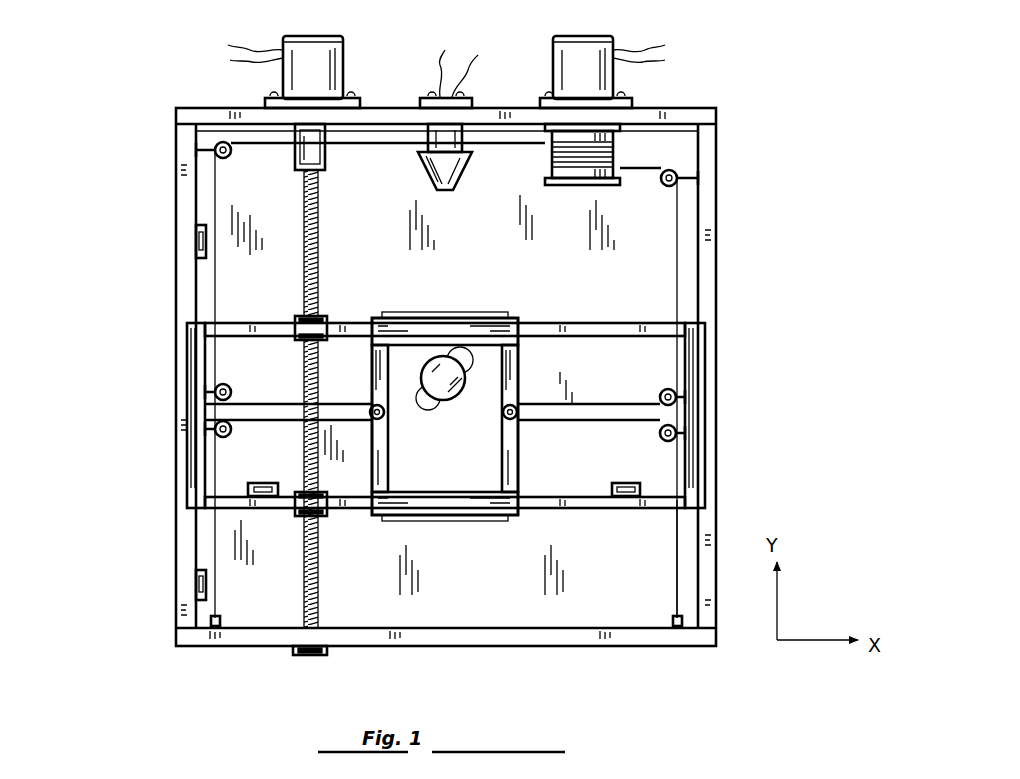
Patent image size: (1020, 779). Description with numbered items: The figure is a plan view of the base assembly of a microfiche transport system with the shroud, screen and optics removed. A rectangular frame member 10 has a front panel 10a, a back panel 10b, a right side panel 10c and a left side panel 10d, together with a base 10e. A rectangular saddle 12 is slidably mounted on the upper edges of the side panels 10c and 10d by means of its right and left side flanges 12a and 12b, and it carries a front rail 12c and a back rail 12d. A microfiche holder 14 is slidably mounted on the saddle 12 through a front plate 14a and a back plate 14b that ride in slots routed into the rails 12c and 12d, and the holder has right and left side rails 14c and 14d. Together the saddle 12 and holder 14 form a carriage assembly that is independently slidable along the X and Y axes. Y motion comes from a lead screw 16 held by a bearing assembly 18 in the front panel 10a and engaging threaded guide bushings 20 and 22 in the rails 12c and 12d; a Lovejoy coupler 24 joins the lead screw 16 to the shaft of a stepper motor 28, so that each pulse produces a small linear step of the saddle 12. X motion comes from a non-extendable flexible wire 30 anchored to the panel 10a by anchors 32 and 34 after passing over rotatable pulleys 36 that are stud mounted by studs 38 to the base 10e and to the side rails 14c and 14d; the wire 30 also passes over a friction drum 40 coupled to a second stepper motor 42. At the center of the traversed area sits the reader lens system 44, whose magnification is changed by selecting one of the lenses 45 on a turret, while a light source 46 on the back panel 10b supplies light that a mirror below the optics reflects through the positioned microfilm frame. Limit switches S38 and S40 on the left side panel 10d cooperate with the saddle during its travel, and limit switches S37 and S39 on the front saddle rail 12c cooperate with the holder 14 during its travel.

The frame member 10 is at (452, 378).
The front panel 10a is at (553, 647).
The back panel 10b is at (680, 108).
The right side panel 10c is at (716, 294).
The left side panel 10d is at (176, 288).
The base 10e is at (456, 602).
The saddle 12 is at (445, 404).
The right side flange 12a is at (706, 407).
The left side flange 12b is at (187, 408).
The front rail 12c is at (567, 509).
The back rail 12d is at (628, 323).
The microfiche holder 14 is at (451, 411).
The front plate 14a is at (437, 514).
The back plate 14b is at (440, 330).
The right side rail 14c is at (518, 380).
The left side rail 14d is at (372, 378).
The lead screw 16 is at (318, 583).
The bearing assembly 18 is at (325, 656).
The threaded guide bushing 20 is at (327, 516).
The threaded guide bushing 22 is at (302, 315).
The Lovejoy coupler 24 is at (328, 152).
The stepper motor 28 is at (345, 51).
The wire 30 is at (677, 575).
The anchor 32 is at (673, 618).
The anchor 34 is at (220, 616).
The pulley 36 is at (231, 158).
The stud 38 is at (232, 392).
The friction drum 40 is at (584, 186).
The second stepper motor 42 is at (553, 55).
The lens system 44 is at (447, 402).
The lens 45 is at (478, 372).
The light source 46 is at (462, 166).
The limit switch S37 is at (614, 482).
The limit switch S38 is at (196, 599).
The limit switch S39 is at (272, 482).
The limit switch S40 is at (196, 227).